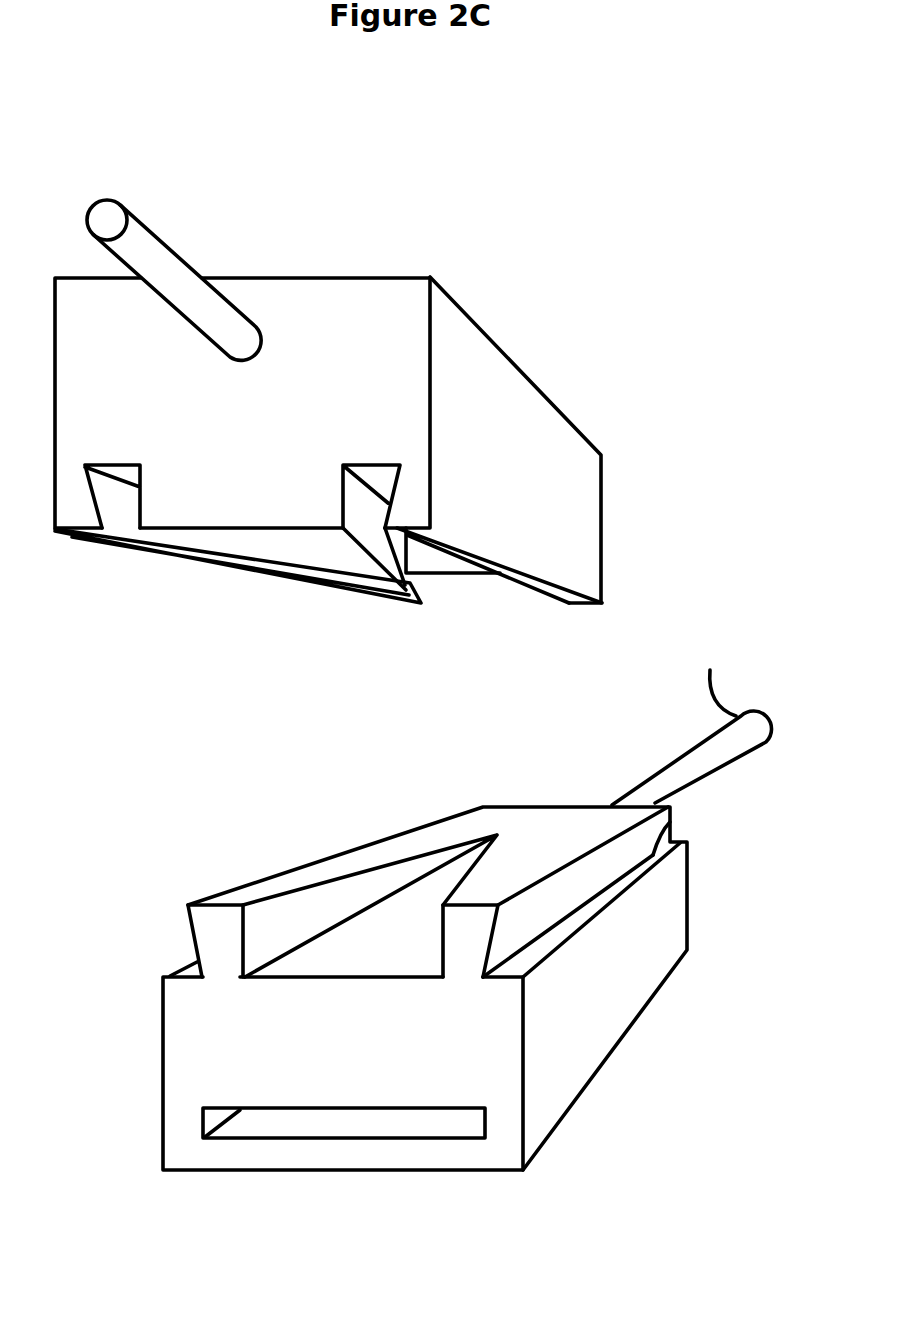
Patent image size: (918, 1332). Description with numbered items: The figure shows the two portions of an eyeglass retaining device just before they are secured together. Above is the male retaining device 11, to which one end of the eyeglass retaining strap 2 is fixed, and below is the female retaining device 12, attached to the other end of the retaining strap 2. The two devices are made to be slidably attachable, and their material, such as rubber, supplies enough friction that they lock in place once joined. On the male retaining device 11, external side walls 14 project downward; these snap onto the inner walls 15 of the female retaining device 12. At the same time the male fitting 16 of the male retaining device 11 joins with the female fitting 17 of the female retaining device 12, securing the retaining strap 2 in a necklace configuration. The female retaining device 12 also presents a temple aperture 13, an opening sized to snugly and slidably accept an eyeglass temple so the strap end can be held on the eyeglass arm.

The eyeglass retaining strap 2 is at (178, 272).
The male retaining device 11 is at (520, 423).
The female retaining device 12 is at (593, 1037).
The temple aperture 13 is at (353, 1123).
The external side walls 14 is at (503, 572).
The inner walls 15 is at (197, 960).
The male fitting 16 is at (248, 545).
The female fitting 17 is at (392, 943).